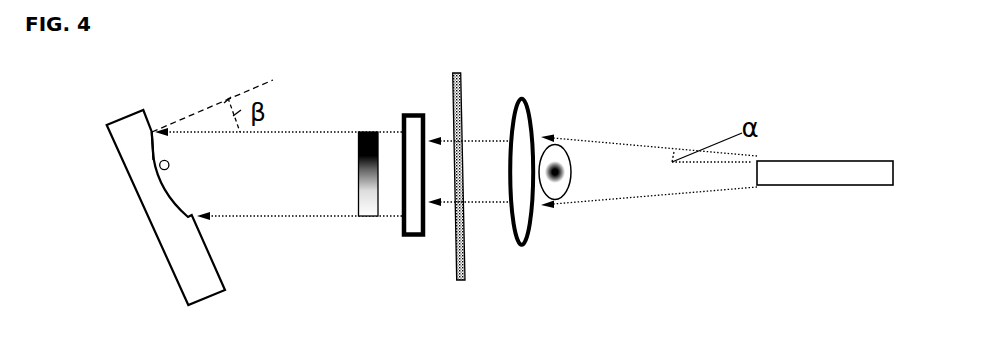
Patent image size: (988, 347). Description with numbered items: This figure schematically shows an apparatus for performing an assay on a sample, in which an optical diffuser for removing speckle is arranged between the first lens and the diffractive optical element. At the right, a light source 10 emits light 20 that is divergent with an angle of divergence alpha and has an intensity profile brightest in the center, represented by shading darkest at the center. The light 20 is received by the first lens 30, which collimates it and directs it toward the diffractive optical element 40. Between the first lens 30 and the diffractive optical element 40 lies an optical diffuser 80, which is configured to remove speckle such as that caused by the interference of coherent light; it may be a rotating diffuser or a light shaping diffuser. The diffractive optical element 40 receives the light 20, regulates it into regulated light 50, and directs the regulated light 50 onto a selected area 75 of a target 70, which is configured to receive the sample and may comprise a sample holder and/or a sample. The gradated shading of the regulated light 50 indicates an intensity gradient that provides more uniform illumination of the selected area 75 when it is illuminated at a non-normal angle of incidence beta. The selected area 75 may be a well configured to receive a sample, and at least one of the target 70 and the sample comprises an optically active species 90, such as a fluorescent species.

The light source 10 is at (825, 196).
The light 20 is at (570, 172).
The first lens 30 is at (519, 190).
The diffractive optical element 40 is at (417, 201).
The regulated light 50 is at (368, 191).
The target 70 is at (166, 227).
The selected area 75 is at (150, 148).
The optical diffuser 80 is at (459, 199).
The optically active species 90 is at (161, 167).